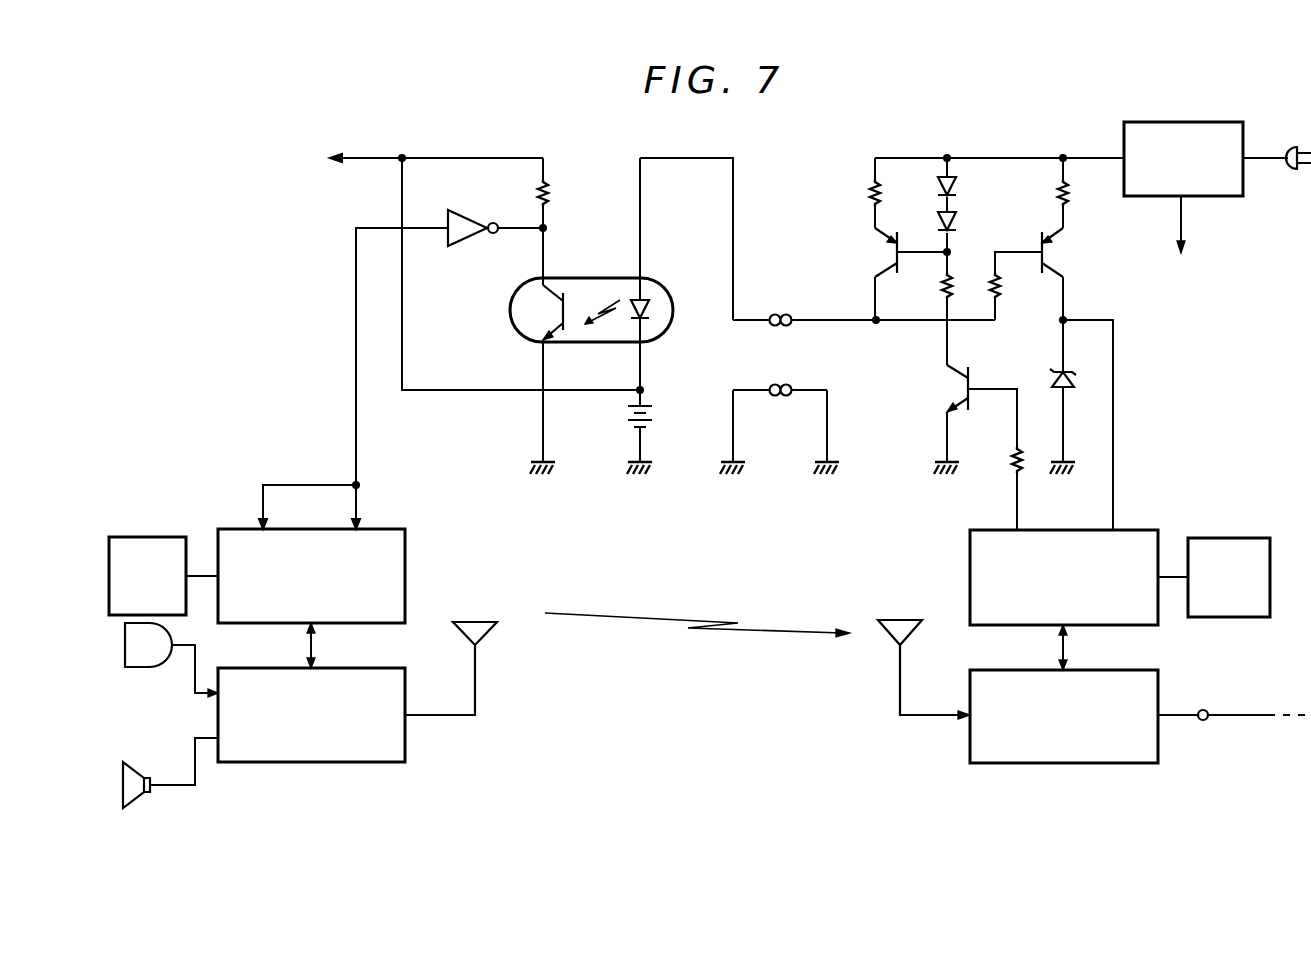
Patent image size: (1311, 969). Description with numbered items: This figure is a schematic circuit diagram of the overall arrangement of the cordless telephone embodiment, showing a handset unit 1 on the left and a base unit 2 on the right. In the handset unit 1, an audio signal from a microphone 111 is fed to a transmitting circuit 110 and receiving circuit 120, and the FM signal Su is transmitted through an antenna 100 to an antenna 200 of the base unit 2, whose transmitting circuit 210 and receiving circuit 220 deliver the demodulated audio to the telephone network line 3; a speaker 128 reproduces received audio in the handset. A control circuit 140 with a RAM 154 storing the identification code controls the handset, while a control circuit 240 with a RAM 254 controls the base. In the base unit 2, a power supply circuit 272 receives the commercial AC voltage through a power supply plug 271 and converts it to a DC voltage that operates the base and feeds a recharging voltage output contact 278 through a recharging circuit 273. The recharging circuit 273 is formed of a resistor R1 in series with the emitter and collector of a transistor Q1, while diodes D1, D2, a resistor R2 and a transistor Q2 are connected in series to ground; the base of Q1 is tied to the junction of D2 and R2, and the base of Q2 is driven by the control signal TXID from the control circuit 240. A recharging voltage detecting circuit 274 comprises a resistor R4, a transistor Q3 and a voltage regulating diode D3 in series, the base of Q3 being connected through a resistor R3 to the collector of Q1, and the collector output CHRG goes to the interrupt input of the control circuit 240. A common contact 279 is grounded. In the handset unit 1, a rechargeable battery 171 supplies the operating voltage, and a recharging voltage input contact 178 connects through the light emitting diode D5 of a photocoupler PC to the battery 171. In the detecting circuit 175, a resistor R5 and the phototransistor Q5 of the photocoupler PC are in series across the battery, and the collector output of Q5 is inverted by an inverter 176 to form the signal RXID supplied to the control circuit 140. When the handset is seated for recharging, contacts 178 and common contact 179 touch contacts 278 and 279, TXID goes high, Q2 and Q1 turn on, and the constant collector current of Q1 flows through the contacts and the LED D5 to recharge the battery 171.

The handset unit 1 is at (385, 827).
The base unit 2 is at (957, 828).
The telephone network line 3 is at (1243, 718).
The antenna 100 is at (475, 680).
The transmitting circuit 110 is at (311, 740).
The receiving circuit 120 is at (290, 764).
The microphone 111 is at (140, 670).
The speaker 128 is at (145, 797).
The control circuit 140 is at (366, 625).
The random access memory 154 is at (158, 534).
The rechargeable battery 171 is at (652, 416).
The detecting circuit 175 is at (584, 309).
The inverter 176 is at (468, 248).
The recharging voltage input contact 178 is at (772, 326).
The common contact 179 is at (772, 396).
The antenna 200 is at (898, 665).
The transmitting circuit 210 is at (1064, 742).
The receiving circuit 220 is at (1032, 765).
The control circuit 240 is at (1118, 626).
The RAM 254 is at (1242, 538).
The power supply plug 271 is at (1291, 170).
The power supply circuit 272 is at (1217, 197).
The recharging circuit 273 is at (898, 142).
The recharging voltage detecting circuit 274 is at (1035, 142).
The recharging voltage output contact 278 is at (790, 326).
The common contact 279 is at (790, 396).
The resistor R1 is at (869, 193).
The resistor R2 is at (952, 286).
The resistor R3 is at (999, 288).
The resistor R4 is at (1068, 194).
The resistor R5 is at (550, 195).
The transistor Q1 is at (900, 258).
The transistor Q2 is at (970, 400).
The transistor Q3 is at (1040, 262).
The phototransistor Q5 is at (563, 326).
The diode D1 is at (958, 182).
The diode D2 is at (958, 218).
The voltage regulating diode D3 is at (1072, 380).
The light emitting diode D5 is at (650, 316).
The photocoupler PC is at (584, 309).
The inverted output RXID is at (356, 270).
The control signal TXID is at (1017, 507).
The collector output CHRG is at (1113, 405).
The FM signal Su is at (650, 620).